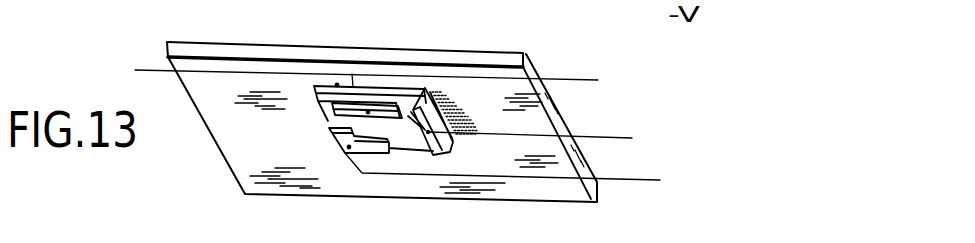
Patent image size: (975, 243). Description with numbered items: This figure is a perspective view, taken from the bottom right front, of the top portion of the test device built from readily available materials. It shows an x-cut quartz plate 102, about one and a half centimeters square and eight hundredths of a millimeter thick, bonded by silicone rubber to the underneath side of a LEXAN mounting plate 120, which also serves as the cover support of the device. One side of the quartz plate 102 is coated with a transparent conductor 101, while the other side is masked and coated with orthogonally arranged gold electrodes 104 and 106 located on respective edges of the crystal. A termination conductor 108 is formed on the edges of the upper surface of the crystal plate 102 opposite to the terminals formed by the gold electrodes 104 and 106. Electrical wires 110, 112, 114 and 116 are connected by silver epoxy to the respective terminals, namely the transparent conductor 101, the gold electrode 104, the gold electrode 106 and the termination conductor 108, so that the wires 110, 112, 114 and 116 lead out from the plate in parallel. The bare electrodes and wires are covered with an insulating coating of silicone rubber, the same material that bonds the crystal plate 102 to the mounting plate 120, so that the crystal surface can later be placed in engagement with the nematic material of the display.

The electrical wire 110 is at (147, 70).
The LEXAN mounting plate 120 is at (235, 52).
The electrical wire 114 is at (572, 80).
The electrical wire 112 is at (609, 110).
The electrical wire 116 is at (634, 157).
The transparent conductor 101 is at (337, 85).
The x-cut quartz plate 102 is at (331, 112).
The gold electrode 106 is at (398, 106).
The termination conductor 108 is at (388, 152).
The gold electrode 104 is at (436, 154).